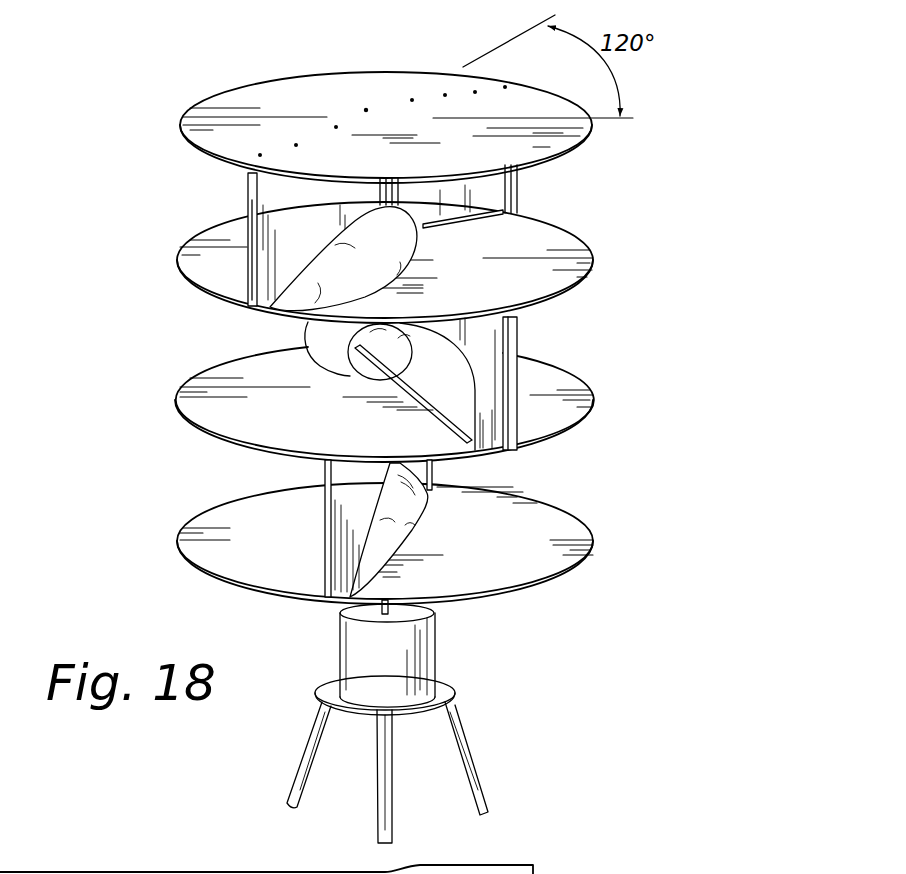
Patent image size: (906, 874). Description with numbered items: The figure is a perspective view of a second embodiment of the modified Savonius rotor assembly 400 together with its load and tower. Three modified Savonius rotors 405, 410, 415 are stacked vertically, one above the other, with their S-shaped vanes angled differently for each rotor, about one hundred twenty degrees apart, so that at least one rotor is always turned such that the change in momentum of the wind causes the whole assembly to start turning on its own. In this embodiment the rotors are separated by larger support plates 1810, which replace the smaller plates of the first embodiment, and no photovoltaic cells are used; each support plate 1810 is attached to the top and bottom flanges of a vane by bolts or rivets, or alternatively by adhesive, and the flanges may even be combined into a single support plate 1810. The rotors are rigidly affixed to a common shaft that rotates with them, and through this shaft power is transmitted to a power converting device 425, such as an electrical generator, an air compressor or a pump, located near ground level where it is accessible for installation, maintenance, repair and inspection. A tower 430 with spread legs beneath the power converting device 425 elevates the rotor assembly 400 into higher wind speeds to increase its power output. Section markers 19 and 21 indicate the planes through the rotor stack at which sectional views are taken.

The rotor assembly 400 is at (709, 326).
The modified Savonius rotor 405 is at (340, 592).
The modified Savonius rotor 410 is at (520, 338).
The modified Savonius rotor 415 is at (258, 198).
The power converting device 425 is at (432, 650).
The tower 430 is at (465, 742).
The support plate 1810 is at (374, 42).
The section line 19 is at (323, 480).
The section line 21 is at (533, 212).